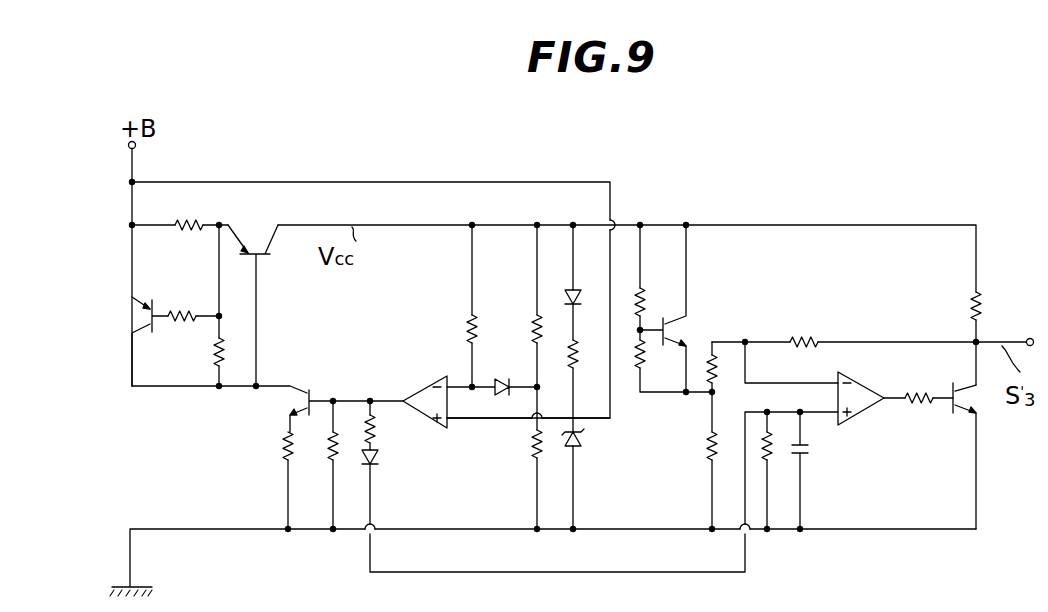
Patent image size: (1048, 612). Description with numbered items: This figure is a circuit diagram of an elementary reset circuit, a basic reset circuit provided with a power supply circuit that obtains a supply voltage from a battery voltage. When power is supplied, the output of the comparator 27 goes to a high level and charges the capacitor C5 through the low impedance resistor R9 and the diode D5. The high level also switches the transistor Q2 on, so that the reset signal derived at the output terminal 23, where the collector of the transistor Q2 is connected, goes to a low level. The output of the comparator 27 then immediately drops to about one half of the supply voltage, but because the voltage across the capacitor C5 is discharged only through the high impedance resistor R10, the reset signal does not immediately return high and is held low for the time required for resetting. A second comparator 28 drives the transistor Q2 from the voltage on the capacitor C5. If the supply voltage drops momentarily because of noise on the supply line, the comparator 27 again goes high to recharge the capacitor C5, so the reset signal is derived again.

The output terminal 23 is at (1040, 328).
The comparator 27 is at (433, 379).
The operational amplifier (comparator) 28 is at (859, 390).
The low impedance resistor R9 is at (375, 427).
The diode D5 is at (379, 458).
The high impedance resistor R10 is at (774, 434).
The capacitor C5 is at (808, 458).
The transistor Q2 is at (970, 400).